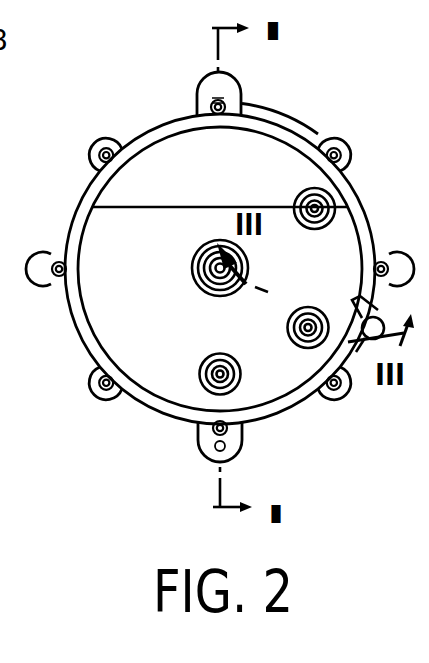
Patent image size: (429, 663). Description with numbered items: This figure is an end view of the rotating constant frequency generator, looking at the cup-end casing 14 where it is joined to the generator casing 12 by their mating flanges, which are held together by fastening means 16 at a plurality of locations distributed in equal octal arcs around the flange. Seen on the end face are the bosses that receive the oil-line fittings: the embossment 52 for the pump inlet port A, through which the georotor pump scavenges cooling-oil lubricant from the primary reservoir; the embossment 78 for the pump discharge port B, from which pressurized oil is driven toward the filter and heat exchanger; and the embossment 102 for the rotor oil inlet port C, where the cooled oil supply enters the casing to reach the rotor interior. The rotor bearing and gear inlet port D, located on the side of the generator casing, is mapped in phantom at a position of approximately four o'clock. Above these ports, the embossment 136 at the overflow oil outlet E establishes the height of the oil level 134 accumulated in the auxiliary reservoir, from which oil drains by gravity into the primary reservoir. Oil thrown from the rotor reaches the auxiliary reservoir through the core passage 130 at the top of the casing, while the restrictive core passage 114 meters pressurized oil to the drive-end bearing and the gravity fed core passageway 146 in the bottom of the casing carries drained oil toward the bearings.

The generator casing 12 is at (280, 127).
The cup-end casing 14 is at (300, 131).
The fastening means 16 is at (200, 110).
The embossment 52 is at (291, 313).
The embossment 78 is at (222, 352).
The embossment 102 is at (197, 256).
The core passage 114 is at (351, 310).
The core passage 130 is at (250, 79).
The level of oil 134 is at (203, 206).
The embossment 136 is at (318, 232).
The gravity fed core passageway 146 is at (198, 455).
The overflow oil outlet E is at (313, 190).
The rotor oil inlet port C is at (195, 275).
The pump inlet port A is at (296, 336).
The pump discharge port B is at (200, 365).
The rotor bearing and gear inlet port D is at (397, 292).